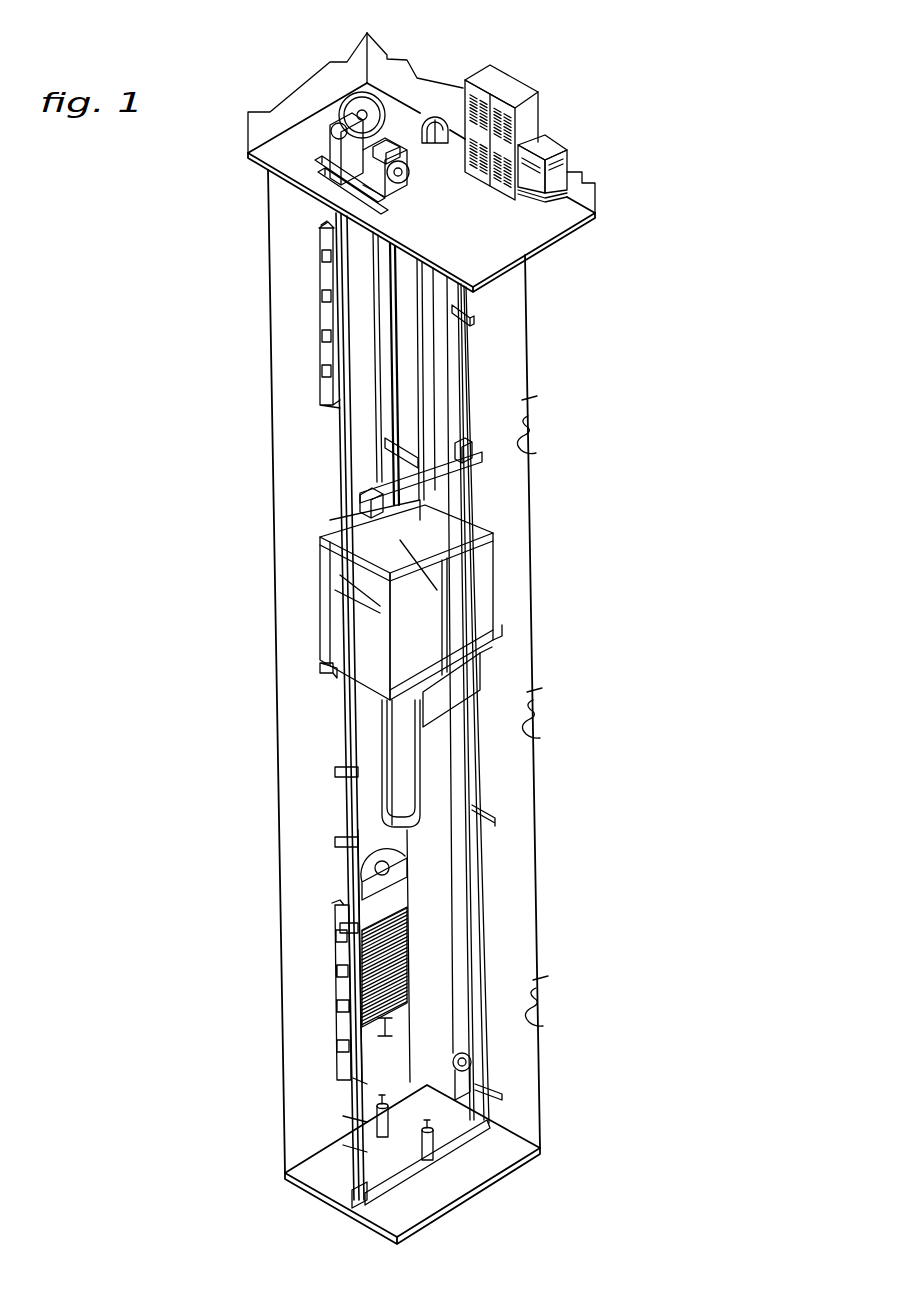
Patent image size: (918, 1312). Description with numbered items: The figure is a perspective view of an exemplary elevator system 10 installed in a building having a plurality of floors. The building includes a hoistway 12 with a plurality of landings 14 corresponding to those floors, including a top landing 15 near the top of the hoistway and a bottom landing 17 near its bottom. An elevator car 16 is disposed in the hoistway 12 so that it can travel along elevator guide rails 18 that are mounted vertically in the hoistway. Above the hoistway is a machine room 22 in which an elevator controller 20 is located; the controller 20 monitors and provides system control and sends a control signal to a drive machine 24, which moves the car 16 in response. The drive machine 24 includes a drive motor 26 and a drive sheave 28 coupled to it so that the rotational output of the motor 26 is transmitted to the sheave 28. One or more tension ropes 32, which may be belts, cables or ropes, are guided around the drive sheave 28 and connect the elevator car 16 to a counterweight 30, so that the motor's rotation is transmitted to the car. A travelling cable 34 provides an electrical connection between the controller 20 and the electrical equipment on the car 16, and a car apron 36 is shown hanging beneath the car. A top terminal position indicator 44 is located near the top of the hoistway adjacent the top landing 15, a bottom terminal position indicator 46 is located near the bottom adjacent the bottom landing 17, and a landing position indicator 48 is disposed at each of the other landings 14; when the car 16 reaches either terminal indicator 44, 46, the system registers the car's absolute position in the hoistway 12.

The elevator system 10 is at (193, 287).
The hoistway 12 is at (300, 720).
The landings 14 is at (535, 690).
The top landing 15 is at (530, 398).
The elevator car 16 is at (322, 576).
The bottom landing 17 is at (540, 978).
The elevator guide rails 18 is at (340, 821).
The elevator controller 20 is at (490, 73).
The machine room 22 is at (307, 88).
The drive machine 24 is at (310, 159).
The drive motor 26 is at (412, 168).
The drive sheave 28 is at (380, 60).
The counterweight 30 is at (383, 988).
The tension ropes 32 is at (412, 290).
The travelling cable 34 is at (418, 808).
The car apron 36 is at (480, 681).
The top terminal position indicator 44 is at (536, 456).
The bottom terminal position indicator 46 is at (540, 1030).
The landing position indicator 48 is at (537, 742).